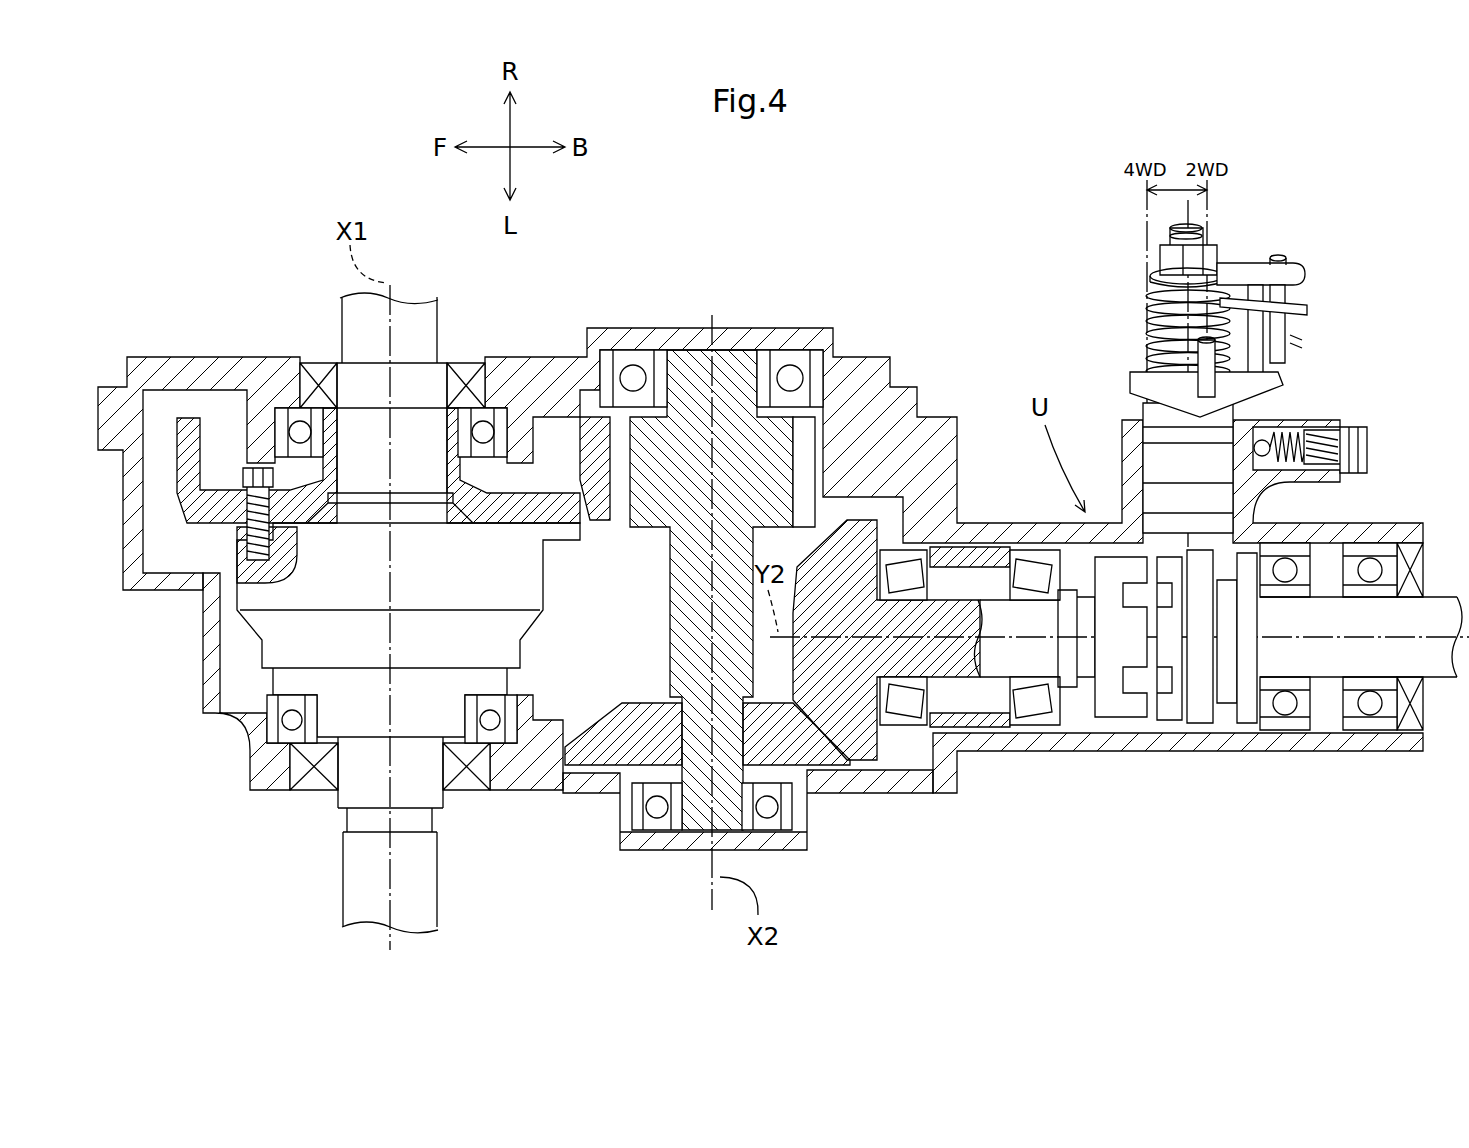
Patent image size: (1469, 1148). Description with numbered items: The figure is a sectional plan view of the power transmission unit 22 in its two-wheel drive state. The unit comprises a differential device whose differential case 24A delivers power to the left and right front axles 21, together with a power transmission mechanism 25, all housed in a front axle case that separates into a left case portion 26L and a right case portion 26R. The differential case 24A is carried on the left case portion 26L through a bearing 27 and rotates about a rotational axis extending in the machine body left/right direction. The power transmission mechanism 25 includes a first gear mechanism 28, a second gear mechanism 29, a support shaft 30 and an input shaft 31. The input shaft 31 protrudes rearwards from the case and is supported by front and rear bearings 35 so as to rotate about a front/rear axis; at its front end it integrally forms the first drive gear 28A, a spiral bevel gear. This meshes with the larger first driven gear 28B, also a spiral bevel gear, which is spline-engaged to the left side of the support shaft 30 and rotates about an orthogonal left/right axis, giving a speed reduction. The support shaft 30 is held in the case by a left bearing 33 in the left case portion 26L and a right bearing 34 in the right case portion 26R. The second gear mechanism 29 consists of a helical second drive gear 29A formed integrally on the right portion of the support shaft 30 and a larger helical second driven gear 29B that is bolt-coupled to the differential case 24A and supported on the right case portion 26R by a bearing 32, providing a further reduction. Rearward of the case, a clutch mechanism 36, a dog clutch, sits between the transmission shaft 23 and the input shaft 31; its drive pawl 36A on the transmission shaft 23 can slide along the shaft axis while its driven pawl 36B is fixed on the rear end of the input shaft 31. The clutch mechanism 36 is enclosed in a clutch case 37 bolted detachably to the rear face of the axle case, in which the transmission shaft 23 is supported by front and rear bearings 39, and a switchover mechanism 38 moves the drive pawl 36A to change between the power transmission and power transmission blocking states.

The front axle 21 is at (428, 318).
The power transmission unit 22 is at (760, 531).
The transmission shaft 23 is at (1433, 673).
The differential case 24A is at (262, 648).
The power transmission mechanism 25 is at (838, 510).
The right case portion 26R is at (217, 357).
The left case portion 26L is at (205, 715).
The bearing 27 is at (263, 727).
The first gear mechanism 28 is at (750, 799).
The first drive gear 28A is at (883, 747).
The first driven gear 28B is at (810, 767).
The second gear mechanism 29 is at (697, 377).
The second drive gear 29A is at (803, 420).
The second driven gear 29B is at (612, 452).
The support shaft 30 is at (668, 625).
The input shaft 31 is at (987, 673).
The bearing 32 is at (485, 427).
The bearing 33 is at (650, 810).
The bearing 34 is at (630, 370).
The bearing 35 is at (912, 717).
The clutch mechanism 36 is at (1154, 705).
The drive pawl 36A is at (1170, 712).
The driven pawl 36B is at (1137, 712).
The clutch case 37 is at (1273, 747).
The switchover mechanism 38 is at (1115, 350).
The bearing 39 is at (1363, 727).